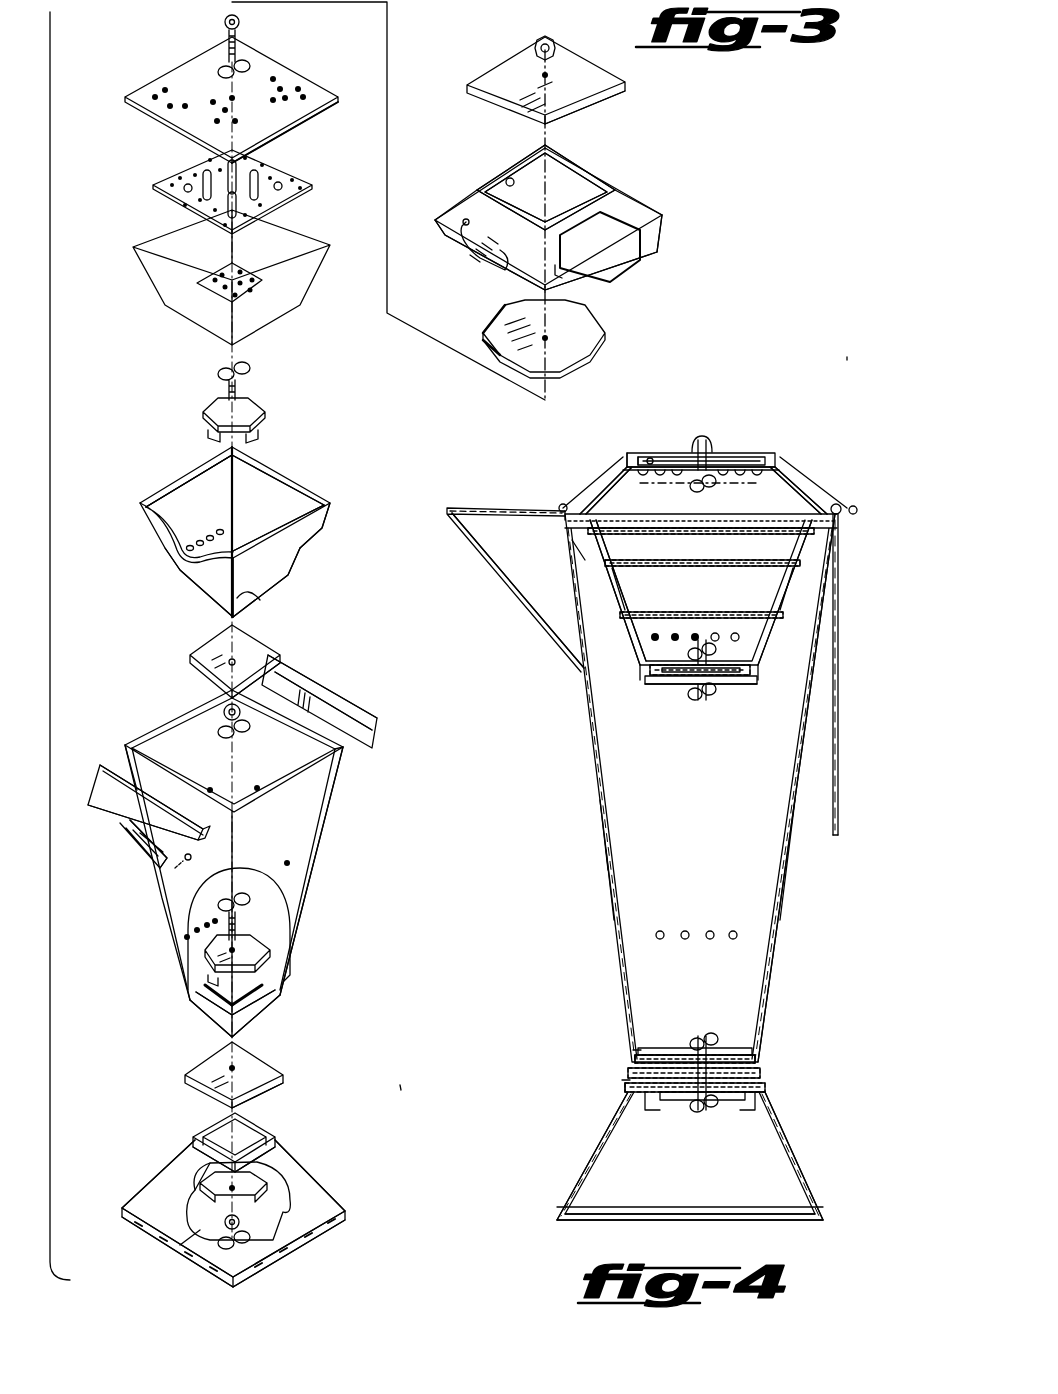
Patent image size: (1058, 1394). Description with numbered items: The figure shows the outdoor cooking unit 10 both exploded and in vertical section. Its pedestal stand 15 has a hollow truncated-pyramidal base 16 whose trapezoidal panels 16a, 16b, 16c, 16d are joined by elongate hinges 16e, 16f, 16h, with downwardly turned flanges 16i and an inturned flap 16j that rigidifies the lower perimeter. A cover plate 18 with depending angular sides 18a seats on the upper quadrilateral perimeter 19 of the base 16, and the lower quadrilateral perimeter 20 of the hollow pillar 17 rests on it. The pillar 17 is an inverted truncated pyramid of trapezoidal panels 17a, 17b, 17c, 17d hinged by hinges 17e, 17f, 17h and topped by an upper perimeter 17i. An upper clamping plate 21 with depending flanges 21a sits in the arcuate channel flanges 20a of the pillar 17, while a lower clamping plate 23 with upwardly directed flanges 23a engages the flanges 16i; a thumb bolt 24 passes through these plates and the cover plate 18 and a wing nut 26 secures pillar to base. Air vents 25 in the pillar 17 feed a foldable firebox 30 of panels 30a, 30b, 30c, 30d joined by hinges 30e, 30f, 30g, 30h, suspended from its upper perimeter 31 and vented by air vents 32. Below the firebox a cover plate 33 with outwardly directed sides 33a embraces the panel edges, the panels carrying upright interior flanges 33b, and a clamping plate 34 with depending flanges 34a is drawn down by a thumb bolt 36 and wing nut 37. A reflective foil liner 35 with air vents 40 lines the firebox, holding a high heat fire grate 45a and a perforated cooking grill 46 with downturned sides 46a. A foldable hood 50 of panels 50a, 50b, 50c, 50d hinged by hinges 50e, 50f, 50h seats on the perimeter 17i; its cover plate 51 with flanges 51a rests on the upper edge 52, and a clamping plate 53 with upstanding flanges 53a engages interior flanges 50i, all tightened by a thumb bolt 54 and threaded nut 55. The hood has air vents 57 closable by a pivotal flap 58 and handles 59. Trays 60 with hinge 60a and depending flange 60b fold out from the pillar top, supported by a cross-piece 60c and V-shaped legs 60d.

In FIG. 3, the outdoor cooking unit 10 is at (365, 1022).
In FIG. 4, the outdoor cooking unit 10 is at (835, 388).
In FIG. 3, the pedestal stand 15 is at (325, 853).
In FIG. 4, the pedestal stand 15 is at (790, 975).
In FIG. 3, the hollow base 16 is at (310, 1160).
In FIG. 4, the hollow base 16 is at (805, 1150).
In FIG. 3, the base panel 16a is at (315, 1188).
In FIG. 3, the base panel 16b is at (165, 1178).
In FIG. 4, the base panel 16b is at (580, 1175).
In FIG. 4, the base panel 16c is at (760, 1200).
In FIG. 4, the base panel 16d is at (805, 1172).
In FIG. 3, the base hinge 16e is at (205, 1250).
In FIG. 3, the base hinge 16f is at (175, 1155).
In FIG. 3, the base hinge 16h is at (335, 1205).
In FIG. 3, the downwardly turned flanges of base 16i is at (213, 1130).
In FIG. 4, the downwardly turned flanges of base 16i is at (748, 1094).
In FIG. 3, the inturned flap 16j is at (320, 1240).
In FIG. 4, the inturned flap 16j is at (648, 1210).
In FIG. 3, the pillar 17 is at (315, 892).
In FIG. 4, the pillar 17 is at (605, 922).
In FIG. 3, the pillar side panel 17a is at (325, 797).
In FIG. 3, the pillar side panel 17b is at (190, 985).
In FIG. 4, the pillar side panel 17b is at (610, 855).
In FIG. 4, the pillar side panel 17c is at (625, 803).
In FIG. 4, the pillar side panel 17d is at (780, 920).
In FIG. 3, the pillar hinge 17e is at (236, 840).
In FIG. 3, the pillar hinge 17f is at (178, 962).
In FIG. 3, the pillar hinge 17h is at (328, 835).
In FIG. 3, the upper quadrilateral perimeter of pillar 17i is at (150, 728).
In FIG. 3, the cover plate 18 is at (288, 1065).
In FIG. 4, the cover plate 18 is at (765, 1068).
In FIG. 3, the depending angular sides of cover plate 18a is at (280, 1080).
In FIG. 4, the depending angular sides of cover plate 18a is at (766, 1086).
In FIG. 3, the upper quadrilateral perimeter of base 19 is at (270, 1128).
In FIG. 4, the upper quadrilateral perimeter of base 19 is at (645, 1096).
In FIG. 3, the lower quadrilateral perimeter of pillar 20 is at (200, 1027).
In FIG. 4, the lower quadrilateral perimeter of pillar 20 is at (630, 1075).
In FIG. 3, the channel flanges 20a is at (280, 990).
In FIG. 4, the channel flanges 20a is at (760, 1055).
In FIG. 3, the upper clamping plate 21 is at (275, 940).
In FIG. 4, the upper clamping plate 21 is at (659, 1046).
In FIG. 3, the depending flanges of upper clamping plate 21a is at (205, 958).
In FIG. 4, the depending flanges of upper clamping plate 21a is at (632, 1058).
In FIG. 3, the lower clamping plate 23 is at (325, 1232).
In FIG. 4, the lower clamping plate 23 is at (731, 1102).
In FIG. 3, the upwardly directed flanges of lower clamping plate 23a is at (150, 1230).
In FIG. 4, the upwardly directed flanges of lower clamping plate 23a is at (623, 1086).
In FIG. 3, the thumb bolt 24 is at (245, 895).
In FIG. 4, the thumb bolt 24 is at (698, 1036).
In FIG. 3, the air vents 25 is at (172, 928).
In FIG. 4, the air vents 25 is at (720, 931).
In FIG. 3, the wing nut 26 is at (250, 1248).
In FIG. 4, the wing nut 26 is at (684, 1112).
In FIG. 3, the firebox 30 is at (150, 543).
In FIG. 4, the firebox 30 is at (608, 616).
In FIG. 3, the firebox panel 30a is at (302, 552).
In FIG. 3, the firebox panel 30b is at (185, 585).
In FIG. 4, the firebox panel 30b is at (640, 652).
In FIG. 3, the firebox panel 30c is at (198, 480).
In FIG. 4, the firebox panel 30c is at (640, 672).
In FIG. 3, the firebox panel 30d is at (318, 495).
In FIG. 4, the firebox panel 30d is at (770, 650).
In FIG. 3, the firebox hinge 30e is at (250, 598).
In FIG. 3, the firebox hinge 30f is at (170, 570).
In FIG. 3, the firebox hinge 30g is at (232, 462).
In FIG. 3, the firebox hinge 30h is at (305, 576).
In FIG. 3, the upper quadrilateral perimeter of firebox 31 is at (305, 478).
In FIG. 3, the firebox air vents 32 is at (225, 538).
In FIG. 4, the firebox air vents 32 is at (674, 633).
In FIG. 3, the firebox cover plate 33 is at (188, 658).
In FIG. 4, the firebox cover plate 33 is at (660, 698).
In FIG. 3, the upwardly extending outwardly directed sides 33a is at (272, 650).
In FIG. 4, the upwardly extending outwardly directed sides 33a is at (742, 676).
In FIG. 4, the upright interior flanges 33b is at (738, 688).
In FIG. 3, the clamping plate 34 is at (203, 398).
In FIG. 4, the clamping plate 34 is at (728, 700).
In FIG. 3, the depending flanges of clamping plate 34a is at (260, 433).
In FIG. 4, the depending flanges of clamping plate 34a is at (650, 685).
In FIG. 3, the foil liner 35 is at (140, 268).
In FIG. 4, the foil liner 35 is at (615, 595).
In FIG. 3, the thumb bolt 36 is at (255, 366).
In FIG. 4, the thumb bolt 36 is at (698, 635).
In FIG. 3, the wing nut 37 is at (224, 710).
In FIG. 4, the wing nut 37 is at (700, 702).
In FIG. 3, the foil liner air vents 40 is at (243, 286).
In FIG. 4, the foil liner air vents 40 is at (742, 612).
In FIG. 3, the high heat fire grate 45a is at (182, 170).
In FIG. 4, the high heat fire grate 45a is at (728, 560).
In FIG. 3, the cooking grill 46 is at (192, 72).
In FIG. 4, the cooking grill 46 is at (600, 537).
In FIG. 3, the downwardly directed sides of grill 46a is at (280, 133).
In FIG. 4, the downwardly directed sides of grill 46a is at (605, 532).
In FIG. 3, the hood 50 is at (695, 172).
In FIG. 4, the hood 50 is at (785, 448).
In FIG. 3, the hood side panel 50a is at (658, 205).
In FIG. 3, the hood side panel 50b is at (450, 238).
In FIG. 4, the hood side panel 50b is at (600, 488).
In FIG. 4, the hood side panel 50c is at (613, 490).
In FIG. 4, the hood side panel 50d is at (810, 492).
In FIG. 3, the hood hinge 50e is at (560, 275).
In FIG. 3, the hood hinge 50f is at (450, 205).
In FIG. 3, the hood hinge 50h is at (640, 168).
In FIG. 3, the interior flanges of hood panels 50i is at (518, 176).
In FIG. 4, the interior flanges of hood panels 50i is at (652, 456).
In FIG. 3, the hood cover plate 51 is at (510, 62).
In FIG. 4, the hood cover plate 51 is at (715, 440).
In FIG. 3, the door / cover plate flanges 51a is at (608, 90).
In FIG. 3, the upper quadrilateral perimetric edge of hood 52 is at (583, 157).
In FIG. 4, the upper quadrilateral perimetric edge of hood 52 is at (605, 452).
In FIG. 3, the hood clamping plate 53 is at (608, 340).
In FIG. 4, the hood clamping plate 53 is at (750, 478).
In FIG. 3, the upstanding flanges of hood clamping plate 53a is at (490, 318).
In FIG. 4, the upstanding flanges of hood clamping plate 53a is at (790, 472).
In FIG. 3, the thumb bolt 54 is at (242, 68).
In FIG. 4, the thumb bolt 54 is at (710, 489).
In FIG. 3, the threaded nut 55 is at (555, 42).
In FIG. 4, the threaded nut 55 is at (703, 433).
In FIG. 4, the hood air vents 57 is at (668, 485).
In FIG. 4, the pivotal flap 58 is at (748, 449).
In FIG. 3, the handle 59 is at (450, 260).
In FIG. 4, the handle 59 is at (556, 503).
In FIG. 3, the tray 60 is at (360, 733).
In FIG. 4, the tray 60 is at (462, 508).
In FIG. 3, the tray hinge 60a is at (110, 778).
In FIG. 3, the depending flange of tray 60b is at (193, 795).
In FIG. 4, the depending flange of tray 60b is at (568, 543).
In FIG. 3, the cross-piece 60c is at (137, 870).
In FIG. 3, the legs 60d is at (125, 845).
In FIG. 4, the legs 60d is at (500, 585).